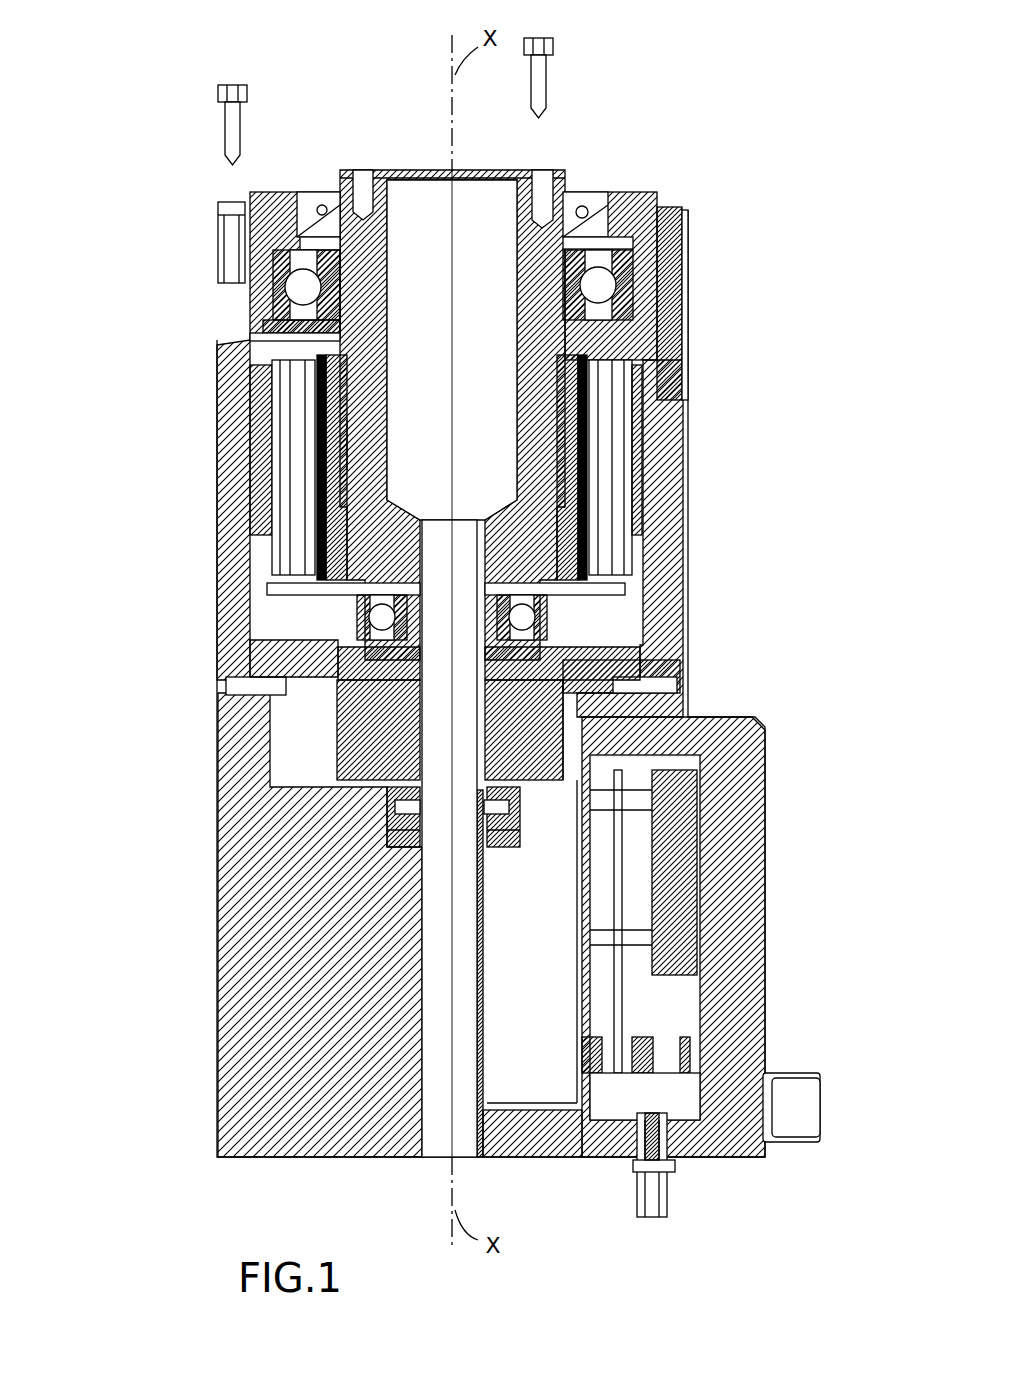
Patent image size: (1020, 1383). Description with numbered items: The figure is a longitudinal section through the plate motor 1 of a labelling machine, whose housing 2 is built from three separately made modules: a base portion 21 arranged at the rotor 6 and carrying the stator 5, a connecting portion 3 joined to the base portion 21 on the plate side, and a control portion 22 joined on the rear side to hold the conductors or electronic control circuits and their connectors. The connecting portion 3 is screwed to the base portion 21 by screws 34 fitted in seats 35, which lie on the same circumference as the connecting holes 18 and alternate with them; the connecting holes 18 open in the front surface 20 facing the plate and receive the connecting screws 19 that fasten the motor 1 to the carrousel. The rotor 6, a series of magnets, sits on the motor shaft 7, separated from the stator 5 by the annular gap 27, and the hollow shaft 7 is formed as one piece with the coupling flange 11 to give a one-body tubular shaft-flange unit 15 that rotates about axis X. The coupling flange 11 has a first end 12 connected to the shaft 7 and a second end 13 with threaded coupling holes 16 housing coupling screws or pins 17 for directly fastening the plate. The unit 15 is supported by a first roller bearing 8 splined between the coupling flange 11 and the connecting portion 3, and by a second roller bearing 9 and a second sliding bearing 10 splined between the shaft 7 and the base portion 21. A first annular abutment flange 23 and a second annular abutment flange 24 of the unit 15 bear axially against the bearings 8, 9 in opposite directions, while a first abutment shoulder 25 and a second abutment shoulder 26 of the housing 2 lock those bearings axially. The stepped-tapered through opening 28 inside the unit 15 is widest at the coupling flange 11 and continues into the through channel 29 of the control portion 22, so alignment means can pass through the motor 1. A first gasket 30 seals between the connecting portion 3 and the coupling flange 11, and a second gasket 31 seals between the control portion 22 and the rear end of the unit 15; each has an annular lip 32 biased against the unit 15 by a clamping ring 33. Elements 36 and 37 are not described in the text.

The motor 1 is at (205, 693).
The housing 2 is at (660, 590).
The connecting portion 3 is at (625, 200).
The stator 5 is at (635, 458).
The rotor 6 is at (580, 440).
The motor shaft 7 is at (563, 485).
The first bearing 8 is at (303, 287).
The second roller bearing 9 is at (375, 617).
The second sliding bearing 10 is at (360, 745).
The coupling flange 11 is at (482, 185).
The first end 12 is at (327, 348).
The second end 13 is at (548, 196).
The shaft-flange unit 15 is at (372, 445).
The coupling holes 16 is at (543, 188).
The coupling screws or pins 17 is at (540, 81).
The connecting holes 18 is at (230, 216).
The connecting screws 19 is at (235, 128).
The front surface 20 is at (280, 195).
The base portion 21 is at (235, 580).
The control portion 22 is at (230, 940).
The first annular abutment flange 23 is at (575, 338).
The second annular abutment flange 24 is at (490, 585).
The first abutment shoulder 25 is at (645, 235).
The second abutment shoulder 26 is at (525, 693).
The annular gap 27 is at (300, 506).
The through opening 28 is at (469, 404).
The through channel 29 is at (434, 1034).
The first gasket 30 is at (330, 218).
The second gasket 31 is at (400, 825).
The annular lip 32 is at (318, 238).
The clamping ring 33 is at (358, 208).
The screws 34 is at (690, 292).
The seats 35 is at (683, 266).
The motor housing 36 is at (617, 895).
The connector 37 is at (792, 1080).